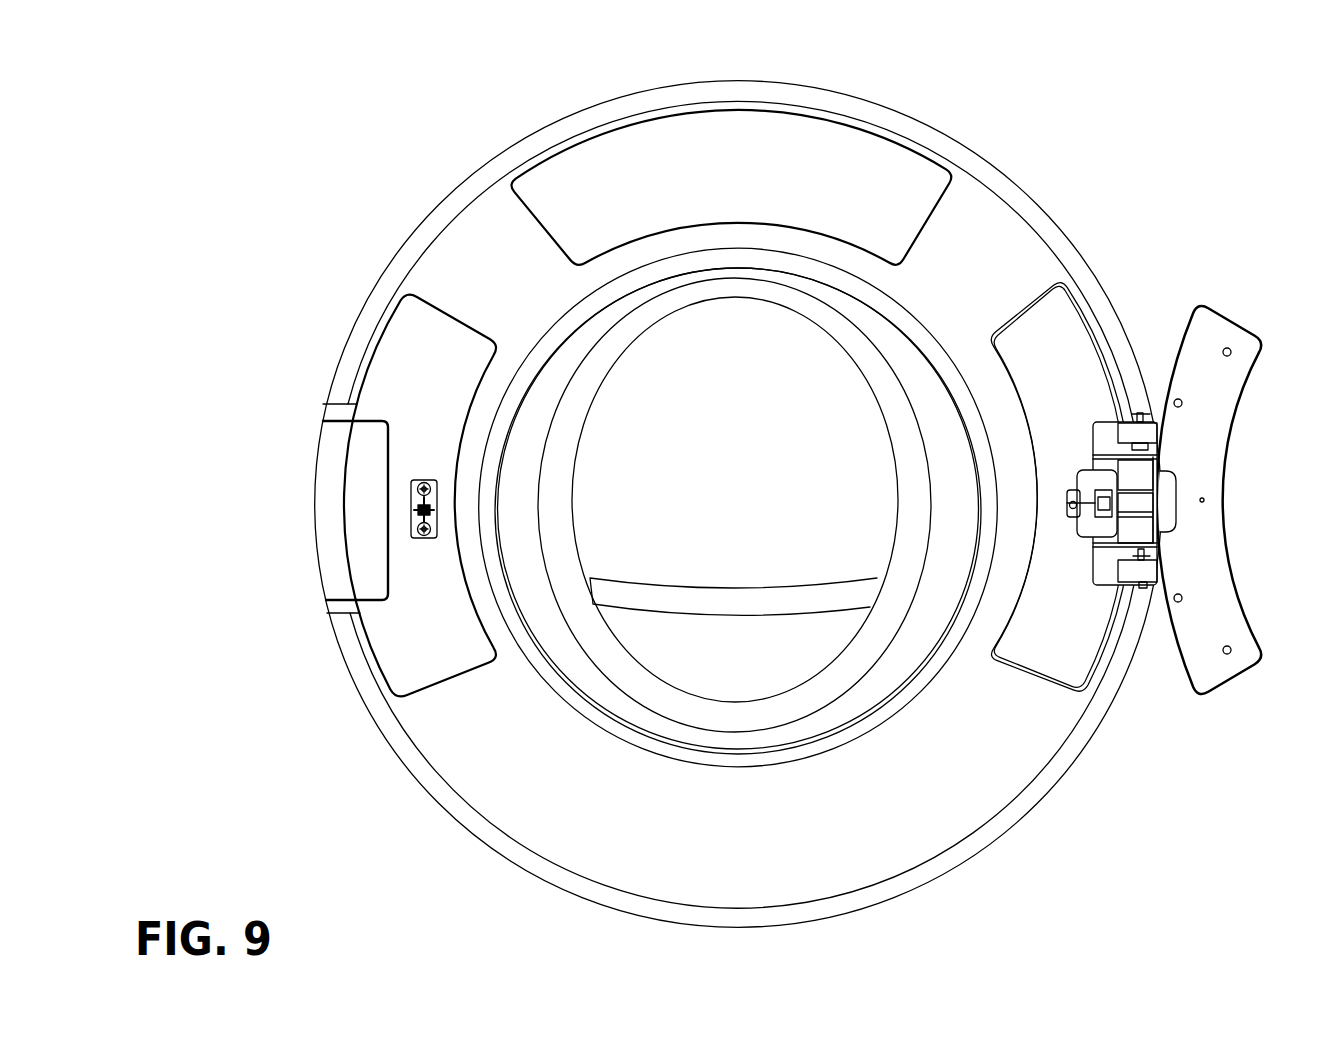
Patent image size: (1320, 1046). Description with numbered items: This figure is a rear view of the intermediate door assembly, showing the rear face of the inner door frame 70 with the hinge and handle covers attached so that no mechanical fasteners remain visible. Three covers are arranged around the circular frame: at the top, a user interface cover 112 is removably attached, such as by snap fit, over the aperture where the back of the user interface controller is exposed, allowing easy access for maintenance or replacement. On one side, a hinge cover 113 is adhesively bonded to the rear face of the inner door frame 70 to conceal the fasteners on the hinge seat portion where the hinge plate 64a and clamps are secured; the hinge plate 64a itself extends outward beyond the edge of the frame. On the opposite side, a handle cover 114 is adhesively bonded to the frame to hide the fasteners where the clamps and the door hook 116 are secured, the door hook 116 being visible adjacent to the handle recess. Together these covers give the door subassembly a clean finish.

The inner door frame 70 is at (1023, 220).
The user interface cover 112 is at (880, 133).
The hinge cover 113 is at (1053, 357).
The handle cover 114 is at (413, 357).
The door hook 116 is at (410, 505).
The hinge plate 64a is at (1105, 570).